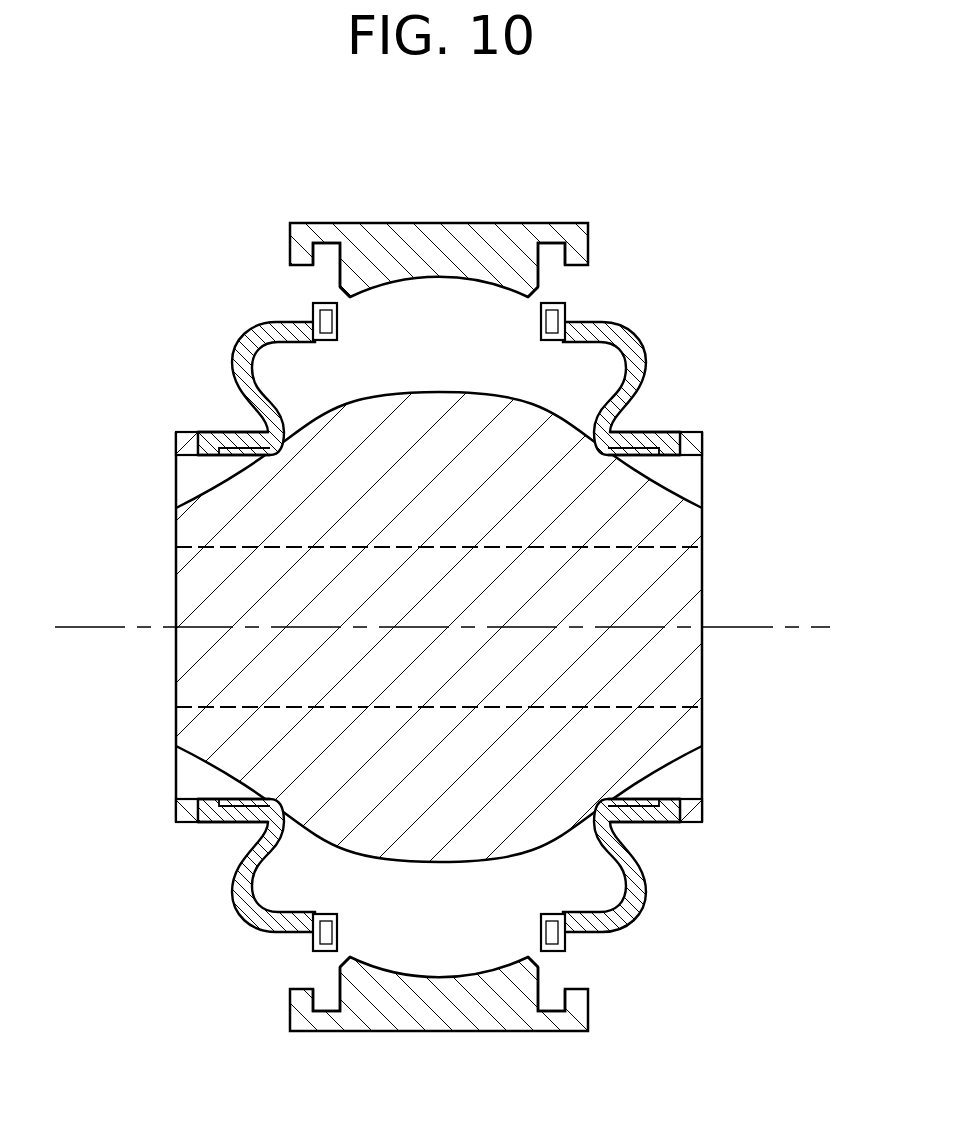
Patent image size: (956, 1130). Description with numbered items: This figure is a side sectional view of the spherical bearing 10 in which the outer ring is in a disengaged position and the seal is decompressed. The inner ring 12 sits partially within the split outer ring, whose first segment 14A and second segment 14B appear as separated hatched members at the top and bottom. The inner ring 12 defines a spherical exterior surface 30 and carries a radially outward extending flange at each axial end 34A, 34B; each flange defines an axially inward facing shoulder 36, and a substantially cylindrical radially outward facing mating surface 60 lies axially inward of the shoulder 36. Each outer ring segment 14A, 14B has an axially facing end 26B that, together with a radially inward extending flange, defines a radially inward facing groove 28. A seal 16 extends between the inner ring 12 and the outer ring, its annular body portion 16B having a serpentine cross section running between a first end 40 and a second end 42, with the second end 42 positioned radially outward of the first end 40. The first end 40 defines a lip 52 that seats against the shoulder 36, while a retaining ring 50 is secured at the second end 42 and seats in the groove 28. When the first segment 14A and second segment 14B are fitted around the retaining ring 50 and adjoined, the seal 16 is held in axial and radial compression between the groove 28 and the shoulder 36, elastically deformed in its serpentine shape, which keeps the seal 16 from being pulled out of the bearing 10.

The spherical bearing 10 is at (157, 283).
The inner ring 12 is at (687, 628).
The first segment 14A is at (588, 237).
The second segment 14B is at (588, 1003).
The seal 16 is at (216, 361).
The annular body portion 16B is at (243, 902).
The axially facing end 26B is at (337, 255).
The radially inward facing groove 28 is at (318, 281).
The spherical exterior surface 30 is at (540, 405).
The axial end 34A is at (703, 780).
The axial end 34B is at (177, 784).
The axially inward facing shoulder 36 is at (222, 449).
The first end 40 is at (218, 431).
The second end 42 is at (313, 314).
The retaining ring 50 is at (540, 318).
The lip 52 is at (200, 462).
The radially outward facing mating surface 60 is at (222, 470).